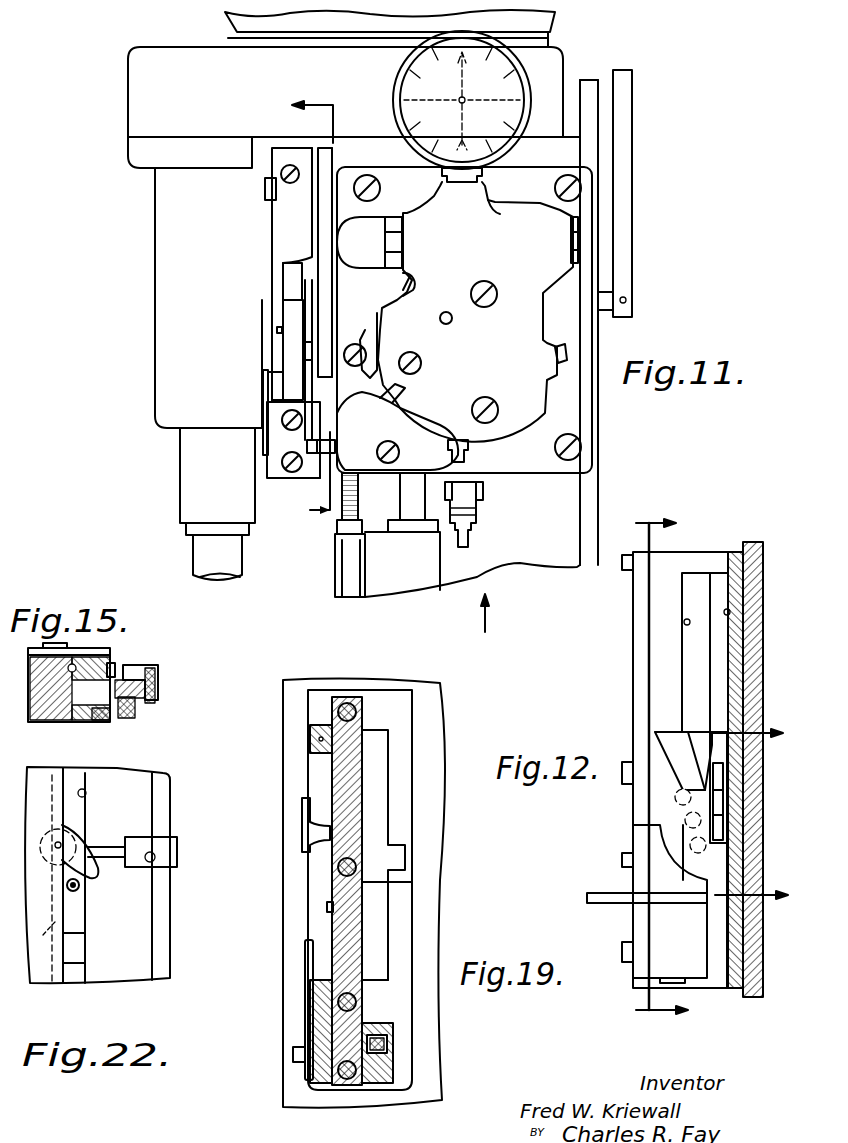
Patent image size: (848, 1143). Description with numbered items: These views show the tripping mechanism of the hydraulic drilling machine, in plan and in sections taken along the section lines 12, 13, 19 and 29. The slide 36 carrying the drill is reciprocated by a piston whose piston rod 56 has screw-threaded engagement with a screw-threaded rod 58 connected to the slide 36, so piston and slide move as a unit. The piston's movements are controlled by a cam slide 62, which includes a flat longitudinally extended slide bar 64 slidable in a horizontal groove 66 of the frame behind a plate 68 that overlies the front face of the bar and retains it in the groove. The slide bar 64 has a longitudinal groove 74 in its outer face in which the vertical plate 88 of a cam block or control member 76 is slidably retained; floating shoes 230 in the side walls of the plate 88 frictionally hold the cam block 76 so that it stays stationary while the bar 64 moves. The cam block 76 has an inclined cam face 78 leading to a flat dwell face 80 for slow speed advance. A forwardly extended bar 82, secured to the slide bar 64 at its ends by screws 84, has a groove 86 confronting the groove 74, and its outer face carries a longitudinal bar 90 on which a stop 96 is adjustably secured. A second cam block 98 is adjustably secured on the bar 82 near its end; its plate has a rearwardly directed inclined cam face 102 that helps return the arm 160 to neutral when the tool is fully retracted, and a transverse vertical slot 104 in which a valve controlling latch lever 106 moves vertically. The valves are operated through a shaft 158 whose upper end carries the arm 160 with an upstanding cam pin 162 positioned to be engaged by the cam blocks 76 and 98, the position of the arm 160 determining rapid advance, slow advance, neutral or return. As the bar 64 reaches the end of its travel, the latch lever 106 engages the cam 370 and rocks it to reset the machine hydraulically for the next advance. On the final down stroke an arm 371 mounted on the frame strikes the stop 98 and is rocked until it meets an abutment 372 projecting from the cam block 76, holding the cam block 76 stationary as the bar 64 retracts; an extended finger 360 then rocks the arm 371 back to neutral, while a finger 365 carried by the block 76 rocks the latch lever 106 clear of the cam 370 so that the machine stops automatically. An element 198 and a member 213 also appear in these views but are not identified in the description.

In FIG. 11, the section line 12— 12 is at (314, 310).
In FIG. 11, the section line 13— 13 is at (497, 613).
In FIG. 19, the section line 19— 19 is at (659, 771).
In FIG. 19, the section line 29— 29 is at (750, 816).
In FIG. 11, the slide 36 is at (342, 578).
In FIG. 11, the piston rod 56 is at (402, 500).
In FIG. 11, the screw-threaded rod 58 is at (359, 495).
In FIG. 11, the cam slide 62 is at (270, 243).
In FIG. 22, the cam slide 62 is at (170, 910).
In FIG. 19, the cam slide 62 is at (633, 673).
In FIG. 11, the slide bar 64 is at (325, 158).
In FIG. 15, the slide bar 64 is at (100, 658).
In FIG. 22, the slide bar 64 is at (56, 790).
In FIG. 12, the slide bar 64 is at (405, 718).
In FIG. 19, the slide bar 64 is at (750, 756).
In FIG. 15, the horizontal groove 66 is at (74, 656).
In FIG. 15, the plate 68 is at (44, 720).
In FIG. 22, the plate 68 is at (60, 982).
In FIG. 19, the plate 68 is at (755, 630).
In FIG. 15, the longitudinal groove 74 is at (114, 668).
In FIG. 22, the longitudinal groove 74 is at (50, 930).
In FIG. 12, the longitudinal groove 74 is at (388, 808).
In FIG. 19, the longitudinal groove 74 is at (729, 611).
In FIG. 11, the cam block 76 is at (290, 313).
In FIG. 22, the cam block 76 is at (77, 915).
In FIG. 12, the cam block 76 is at (383, 880).
In FIG. 19, the cam block 76 is at (720, 803).
In FIG. 11, the inclined cam face 78 is at (303, 358).
In FIG. 12, the inclined cam face 78 is at (383, 945).
In FIG. 19, the inclined cam face 78 is at (683, 812).
In FIG. 11, the dwell face 80 is at (303, 345).
In FIG. 19, the dwell face 80 is at (675, 796).
In FIG. 11, the bar 82 is at (285, 278).
In FIG. 15, the bar 82 is at (156, 688).
In FIG. 22, the bar 82 is at (136, 795).
In FIG. 12, the bar 82 is at (360, 773).
In FIG. 19, the bar 82 is at (672, 563).
In FIG. 11, the screws 84 is at (282, 172).
In FIG. 12, the screws 84 is at (348, 704).
In FIG. 22, the groove 86 is at (86, 790).
In FIG. 19, the groove 86 is at (684, 624).
In FIG. 19, the plate 88 is at (660, 738).
In FIG. 11, the bar 90 is at (283, 222).
In FIG. 15, the bar 90 is at (160, 673).
In FIG. 19, the bar 90 is at (636, 700).
In FIG. 11, the stop 96 is at (266, 190).
In FIG. 22, the stop 96 is at (177, 843).
In FIG. 12, the stop 96 is at (318, 738).
In FIG. 11, the cam block 98 is at (272, 478).
In FIG. 19, the cam block 98 is at (640, 926).
In FIG. 19, the inclined cam face 102 is at (672, 858).
In FIG. 11, the transverse vertical slot 104 is at (310, 442).
In FIG. 12, the transverse vertical slot 104 is at (393, 1046).
In FIG. 11, the latch lever 106 is at (320, 470).
In FIG. 12, the latch lever 106 is at (393, 1040).
In FIG. 19, the latch lever 106 is at (590, 898).
In FIG. 11, the shaft 158 is at (606, 300).
In FIG. 11, the arm 160 is at (333, 303).
In FIG. 11, the cam pin 162 is at (300, 370).
In FIG. 11, the cam plate 198 is at (540, 397).
In FIG. 11, the indicator rod 213 is at (625, 260).
In FIG. 19, the shoes 230 is at (727, 775).
In FIG. 11, the extended finger 360 is at (265, 372).
In FIG. 12, the extended finger 360 is at (306, 952).
In FIG. 11, the finger 365 is at (290, 390).
In FIG. 12, the finger 365 is at (373, 1005).
In FIG. 11, the cam 370 is at (380, 432).
In FIG. 15, the arm 371 is at (136, 710).
In FIG. 22, the arm 371 is at (78, 855).
In FIG. 12, the arm 371 is at (302, 826).
In FIG. 11, the abutment 372 is at (277, 330).
In FIG. 15, the abutment 372 is at (118, 718).
In FIG. 22, the abutment 372 is at (80, 884).
In FIG. 12, the abutment 372 is at (327, 906).